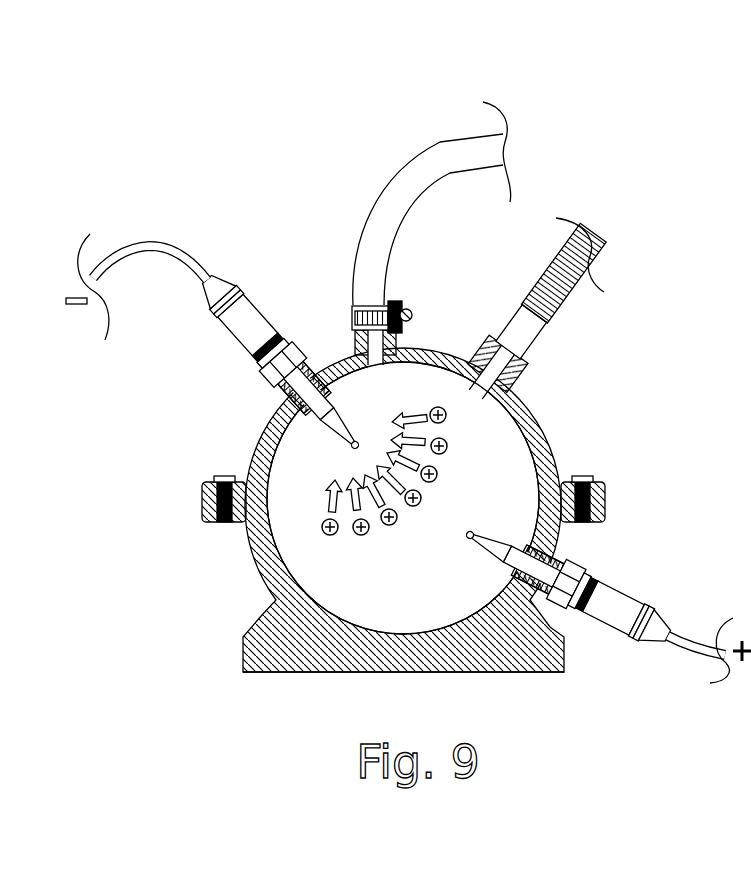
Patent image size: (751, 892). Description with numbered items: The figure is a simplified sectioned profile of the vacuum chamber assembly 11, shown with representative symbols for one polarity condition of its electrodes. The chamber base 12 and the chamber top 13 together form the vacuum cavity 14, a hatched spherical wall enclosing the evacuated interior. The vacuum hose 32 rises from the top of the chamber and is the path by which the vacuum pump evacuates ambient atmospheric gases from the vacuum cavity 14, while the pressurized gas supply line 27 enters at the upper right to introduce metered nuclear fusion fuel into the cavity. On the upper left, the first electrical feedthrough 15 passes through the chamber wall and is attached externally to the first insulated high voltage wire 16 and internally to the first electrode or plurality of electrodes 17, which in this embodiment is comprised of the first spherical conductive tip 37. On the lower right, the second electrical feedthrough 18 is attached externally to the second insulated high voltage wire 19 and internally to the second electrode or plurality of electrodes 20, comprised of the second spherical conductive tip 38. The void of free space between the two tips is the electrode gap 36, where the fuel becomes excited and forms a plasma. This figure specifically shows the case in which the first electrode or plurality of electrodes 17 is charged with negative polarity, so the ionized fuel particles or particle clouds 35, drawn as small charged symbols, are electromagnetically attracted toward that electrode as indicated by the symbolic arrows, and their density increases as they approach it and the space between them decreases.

The vacuum chamber assembly 11 is at (243, 655).
The chamber base 12 is at (272, 585).
The chamber top 13 is at (535, 385).
The vacuum cavity 14 is at (517, 437).
The first electrical feedthrough 15 is at (254, 346).
The first insulated high voltage wire 16 is at (173, 242).
The first electrode or plurality of electrodes 17 is at (348, 443).
The second electrical feedthrough 18 is at (577, 624).
The second insulated high voltage wire 19 is at (694, 636).
The second electrode or plurality of electrodes 20 is at (477, 533).
The pressurized gas supply line 27 is at (532, 285).
The vacuum hose 32 is at (385, 178).
The fuel particles or particle clouds 35 is at (318, 520).
The electrode gap 36 is at (437, 520).
The first spherical conductive tip 37 is at (254, 412).
The second spherical conductive tip 38 is at (577, 541).